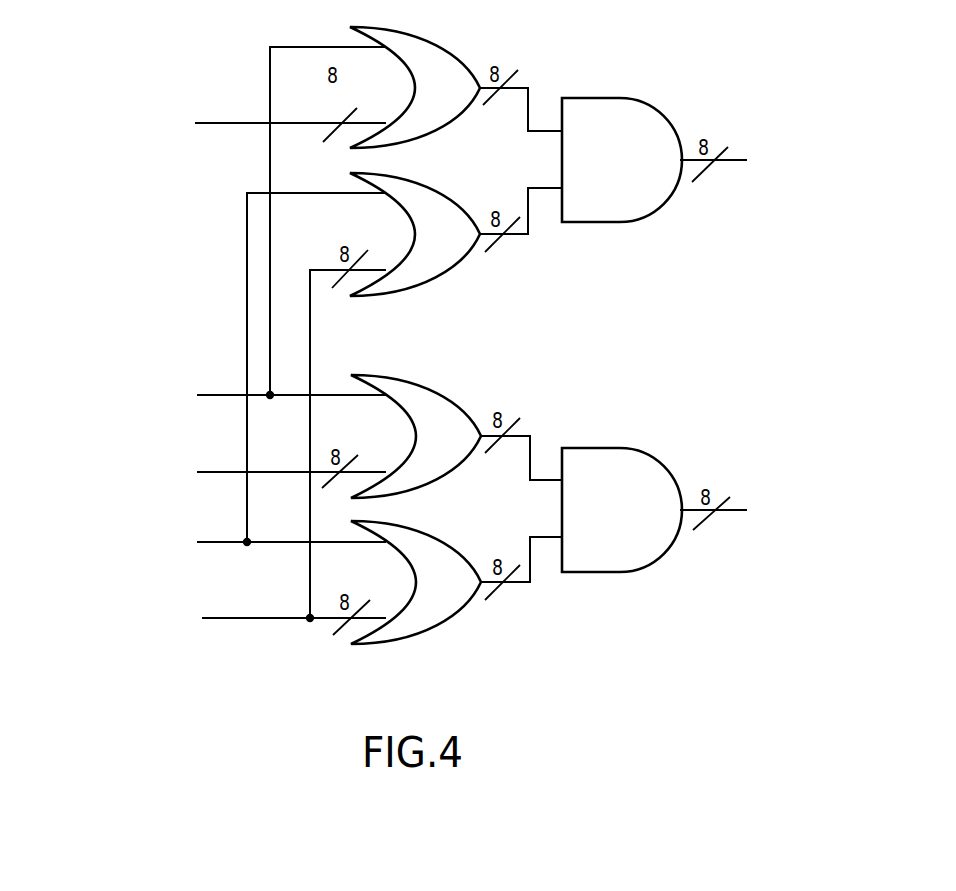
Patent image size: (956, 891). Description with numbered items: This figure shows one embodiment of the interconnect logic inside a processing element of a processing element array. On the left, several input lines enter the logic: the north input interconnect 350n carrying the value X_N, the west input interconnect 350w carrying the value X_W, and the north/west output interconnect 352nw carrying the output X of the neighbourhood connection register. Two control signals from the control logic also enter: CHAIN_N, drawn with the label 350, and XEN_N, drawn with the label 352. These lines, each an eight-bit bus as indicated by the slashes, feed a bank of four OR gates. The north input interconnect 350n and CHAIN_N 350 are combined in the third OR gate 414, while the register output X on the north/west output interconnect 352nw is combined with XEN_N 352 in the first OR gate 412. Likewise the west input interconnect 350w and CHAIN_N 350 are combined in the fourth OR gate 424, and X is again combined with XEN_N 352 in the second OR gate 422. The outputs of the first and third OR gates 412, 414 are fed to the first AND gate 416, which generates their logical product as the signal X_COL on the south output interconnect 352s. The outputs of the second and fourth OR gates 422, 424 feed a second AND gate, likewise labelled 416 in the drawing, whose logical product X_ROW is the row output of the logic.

The north input interconnect 350n is at (145, 118).
The CHAIN_N chain input signal 350 is at (137, 380).
The west input interconnect 350w is at (160, 453).
The XEN_N enable input signal 352 is at (120, 532).
The north/west output interconnect 352nw is at (170, 612).
The south output interconnect 352s is at (778, 133).
The third OR gate 414 is at (461, 100).
The first OR gate 412 is at (461, 247).
The first AND gate 416 is at (631, 177).
The fourth OR gate 424 is at (461, 450).
The second OR gate 422 is at (461, 597).